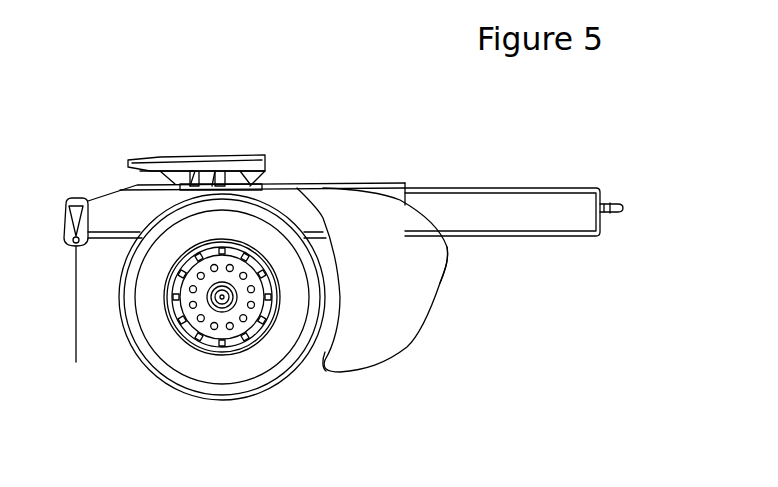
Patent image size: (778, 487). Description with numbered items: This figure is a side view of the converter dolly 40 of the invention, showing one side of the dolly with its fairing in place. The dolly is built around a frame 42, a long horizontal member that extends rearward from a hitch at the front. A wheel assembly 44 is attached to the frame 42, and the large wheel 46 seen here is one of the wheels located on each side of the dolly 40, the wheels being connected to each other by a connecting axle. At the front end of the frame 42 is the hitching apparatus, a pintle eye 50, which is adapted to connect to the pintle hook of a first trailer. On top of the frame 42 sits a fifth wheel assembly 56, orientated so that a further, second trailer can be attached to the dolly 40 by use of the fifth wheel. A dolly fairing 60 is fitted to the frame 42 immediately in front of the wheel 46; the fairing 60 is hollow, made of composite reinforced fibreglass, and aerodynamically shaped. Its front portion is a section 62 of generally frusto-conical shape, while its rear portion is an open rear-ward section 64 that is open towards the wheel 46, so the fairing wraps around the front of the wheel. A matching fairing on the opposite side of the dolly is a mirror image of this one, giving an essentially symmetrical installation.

The converter dolly 40 is at (162, 117).
The frame 42 is at (513, 218).
The wheel assembly 44 is at (138, 382).
The wheels 46 is at (248, 368).
The pintle eye 50 is at (623, 212).
The fifth wheel assembly 56 is at (220, 157).
The dolly fairing 60 is at (390, 332).
The section 62 is at (450, 262).
The open rear-ward section 64 is at (322, 352).